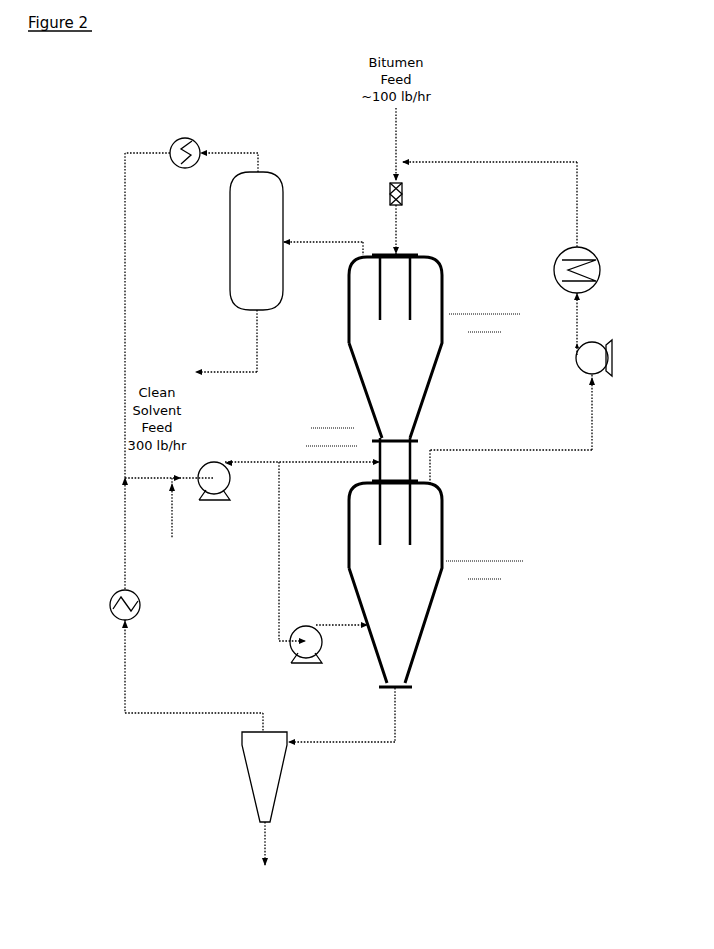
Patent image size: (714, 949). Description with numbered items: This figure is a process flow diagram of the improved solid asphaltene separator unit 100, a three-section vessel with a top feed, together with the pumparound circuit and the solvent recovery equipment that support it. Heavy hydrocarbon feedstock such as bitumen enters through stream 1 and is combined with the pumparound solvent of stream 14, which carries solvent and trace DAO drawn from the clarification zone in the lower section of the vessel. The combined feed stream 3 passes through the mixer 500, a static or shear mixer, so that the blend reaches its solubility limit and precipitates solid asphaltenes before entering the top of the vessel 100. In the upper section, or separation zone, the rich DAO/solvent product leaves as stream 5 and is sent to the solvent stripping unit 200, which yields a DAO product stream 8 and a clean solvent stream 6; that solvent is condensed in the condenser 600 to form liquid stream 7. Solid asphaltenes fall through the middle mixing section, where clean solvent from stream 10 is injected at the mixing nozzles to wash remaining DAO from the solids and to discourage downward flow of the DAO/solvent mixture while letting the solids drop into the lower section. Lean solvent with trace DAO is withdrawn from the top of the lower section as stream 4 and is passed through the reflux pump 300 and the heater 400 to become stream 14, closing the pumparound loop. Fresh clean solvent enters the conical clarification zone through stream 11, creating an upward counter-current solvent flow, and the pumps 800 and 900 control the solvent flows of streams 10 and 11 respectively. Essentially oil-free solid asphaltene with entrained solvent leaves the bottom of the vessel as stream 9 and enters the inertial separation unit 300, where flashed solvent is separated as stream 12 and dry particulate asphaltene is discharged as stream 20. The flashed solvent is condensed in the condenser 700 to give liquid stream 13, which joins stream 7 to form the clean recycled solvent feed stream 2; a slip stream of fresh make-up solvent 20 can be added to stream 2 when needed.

The feed stream 1 is at (400, 144).
The clean recycled solvent feed stream 2 is at (168, 486).
The mixed feed stream 3 is at (432, 229).
The pumparound solvent stream 4 is at (512, 441).
The rich DAO/solvent product stream 5 is at (323, 222).
The clean solvent stream 6 is at (229, 149).
The condensed solvent stream 7 is at (107, 315).
The DAO product stream 8 is at (231, 342).
The solid asphaltene stream 9 is at (356, 744).
The clean solvent stream to mixing zone 10 is at (302, 473).
The clean solvent stream to clarification zone 11 is at (315, 553).
The flashed solvent stream 12 is at (194, 696).
The condensed solvent stream 13 is at (116, 599).
The pumparound solvent stream 14 is at (508, 203).
The dry solid asphaltene stream / make-up solvent slip stream 20 is at (238, 690).
The improved solid asphaltene separator vessel 100 is at (447, 266).
The solvent stripping unit 200 is at (221, 241).
The pump / inertial separation unit 300 is at (453, 557).
The heater 400 is at (605, 270).
The mixer 500 is at (420, 192).
The condenser 600 is at (185, 153).
The condenser 700 is at (142, 605).
The pump 800 is at (214, 492).
The pump 900 is at (329, 653).